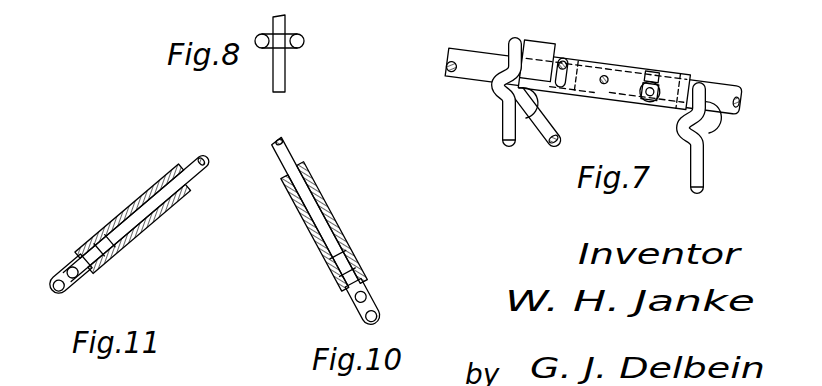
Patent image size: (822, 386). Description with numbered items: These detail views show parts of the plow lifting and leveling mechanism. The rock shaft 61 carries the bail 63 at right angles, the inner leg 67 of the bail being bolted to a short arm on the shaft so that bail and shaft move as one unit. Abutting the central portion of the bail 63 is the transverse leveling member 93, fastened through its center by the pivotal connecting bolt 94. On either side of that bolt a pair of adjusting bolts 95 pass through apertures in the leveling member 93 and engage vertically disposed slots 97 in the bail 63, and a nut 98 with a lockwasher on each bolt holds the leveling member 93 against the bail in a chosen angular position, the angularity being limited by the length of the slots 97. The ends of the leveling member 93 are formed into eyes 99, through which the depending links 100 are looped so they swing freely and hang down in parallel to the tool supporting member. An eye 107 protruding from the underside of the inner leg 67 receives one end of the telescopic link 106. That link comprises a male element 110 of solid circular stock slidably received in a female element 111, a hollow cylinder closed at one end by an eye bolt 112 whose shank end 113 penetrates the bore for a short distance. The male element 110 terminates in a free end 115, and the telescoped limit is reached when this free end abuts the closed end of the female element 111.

In FIG. 7, the rock shaft 61 is at (704, 79).
In FIG. 7, the bail 63 is at (572, 60).
In FIG. 8, the inner leg 67 is at (286, 74).
In FIG. 7, the leveling member 93 is at (662, 110).
In FIG. 7, the pivotal connecting bolt 94 is at (607, 77).
In FIG. 7, the adjusting bolts 95 is at (561, 57).
In FIG. 7, the vertically disposed slots 97 is at (561, 89).
In FIG. 7, the nut 98 is at (646, 103).
In FIG. 7, the eyes 99 is at (512, 42).
In FIG. 7, the depending links 100 is at (503, 124).
In FIG. 11, the telescopic link 106 is at (130, 222).
In FIG. 10, the telescopic link 106 is at (337, 232).
In FIG. 8, the eye 107 is at (304, 42).
In FIG. 7, the male element 110 is at (543, 140).
In FIG. 11, the male element 110 is at (137, 217).
In FIG. 10, the male element 110 is at (315, 211).
In FIG. 11, the female element 111 is at (136, 218).
In FIG. 10, the female element 111 is at (323, 227).
In FIG. 11, the eye bolt 112 is at (65, 279).
In FIG. 10, the eye bolt 112 is at (365, 306).
In FIG. 11, the shank end 113 is at (69, 275).
In FIG. 10, the shank end 113 is at (364, 302).
In FIG. 11, the free end 115 is at (104, 245).
In FIG. 10, the free end 115 is at (342, 263).